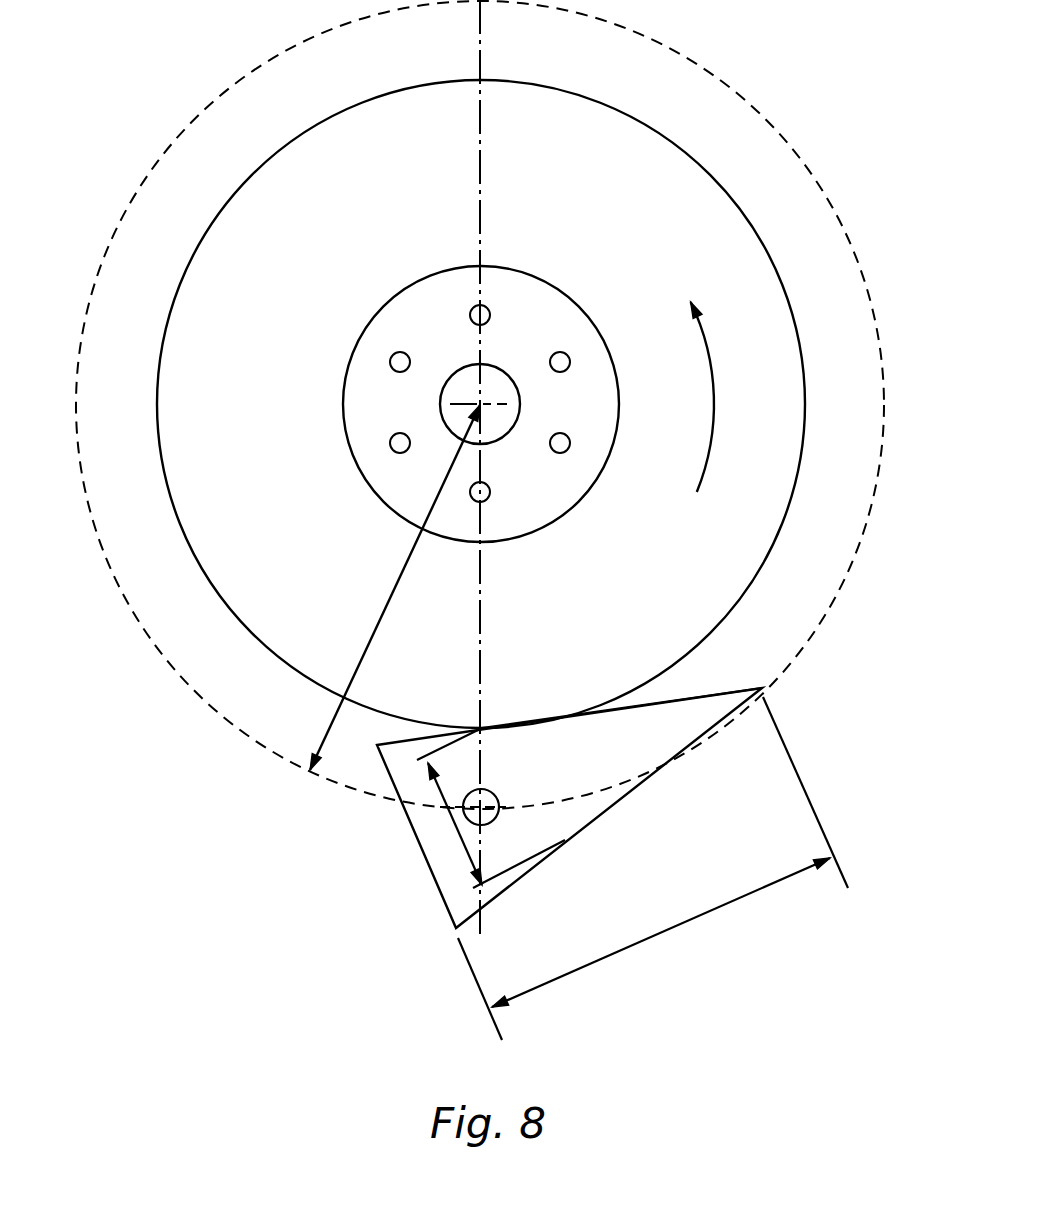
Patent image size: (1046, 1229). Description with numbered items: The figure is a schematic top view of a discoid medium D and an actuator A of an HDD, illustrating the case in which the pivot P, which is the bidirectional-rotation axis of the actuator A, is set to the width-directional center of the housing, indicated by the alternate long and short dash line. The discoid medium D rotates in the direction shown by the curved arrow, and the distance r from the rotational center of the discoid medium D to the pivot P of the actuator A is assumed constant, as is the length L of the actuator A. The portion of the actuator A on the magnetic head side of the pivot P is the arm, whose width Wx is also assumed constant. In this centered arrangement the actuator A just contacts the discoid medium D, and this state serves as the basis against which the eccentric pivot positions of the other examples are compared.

The discoid medium D is at (602, 100).
The actuator A is at (735, 688).
The pivot P is at (500, 797).
The distance r is at (395, 587).
The width of the arm Wx is at (452, 824).
The length of the actuator L is at (653, 868).